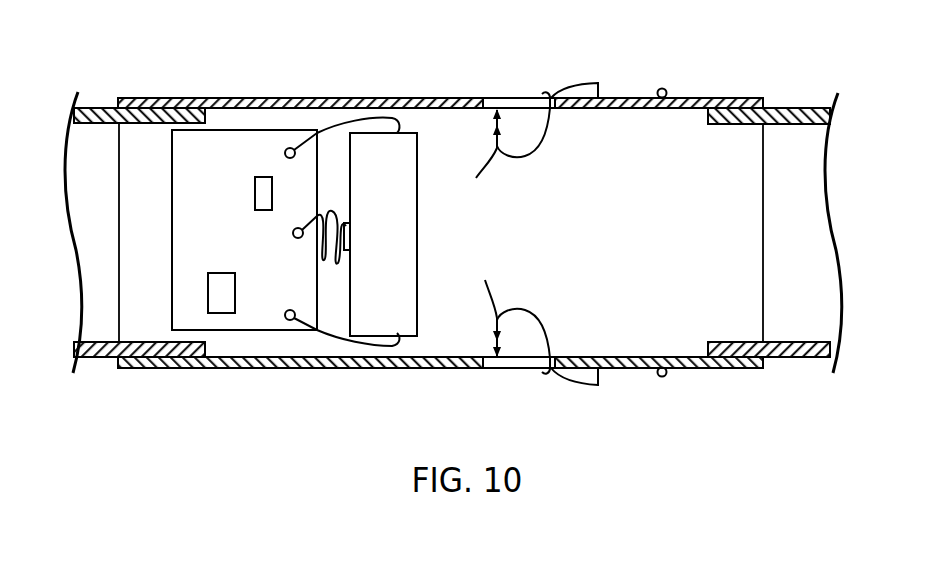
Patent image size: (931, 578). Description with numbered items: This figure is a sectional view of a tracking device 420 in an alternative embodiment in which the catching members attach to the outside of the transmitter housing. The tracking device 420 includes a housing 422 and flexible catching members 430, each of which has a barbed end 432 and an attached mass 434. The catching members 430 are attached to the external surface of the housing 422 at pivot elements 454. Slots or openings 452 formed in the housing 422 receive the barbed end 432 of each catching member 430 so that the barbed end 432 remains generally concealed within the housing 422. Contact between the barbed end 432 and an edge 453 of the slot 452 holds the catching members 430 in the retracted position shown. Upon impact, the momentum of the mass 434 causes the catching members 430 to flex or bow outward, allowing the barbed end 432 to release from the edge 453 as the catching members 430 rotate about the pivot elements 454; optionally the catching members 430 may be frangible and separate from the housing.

The tracking device 420 is at (275, 36).
The housing 422 is at (280, 366).
The flexible catching members 430 is at (618, 97).
The barbed end 432 is at (505, 232).
The mass 434 is at (583, 92).
The slots or openings 452 is at (510, 102).
The edge 453 is at (493, 100).
The pivot elements 454 is at (664, 89).